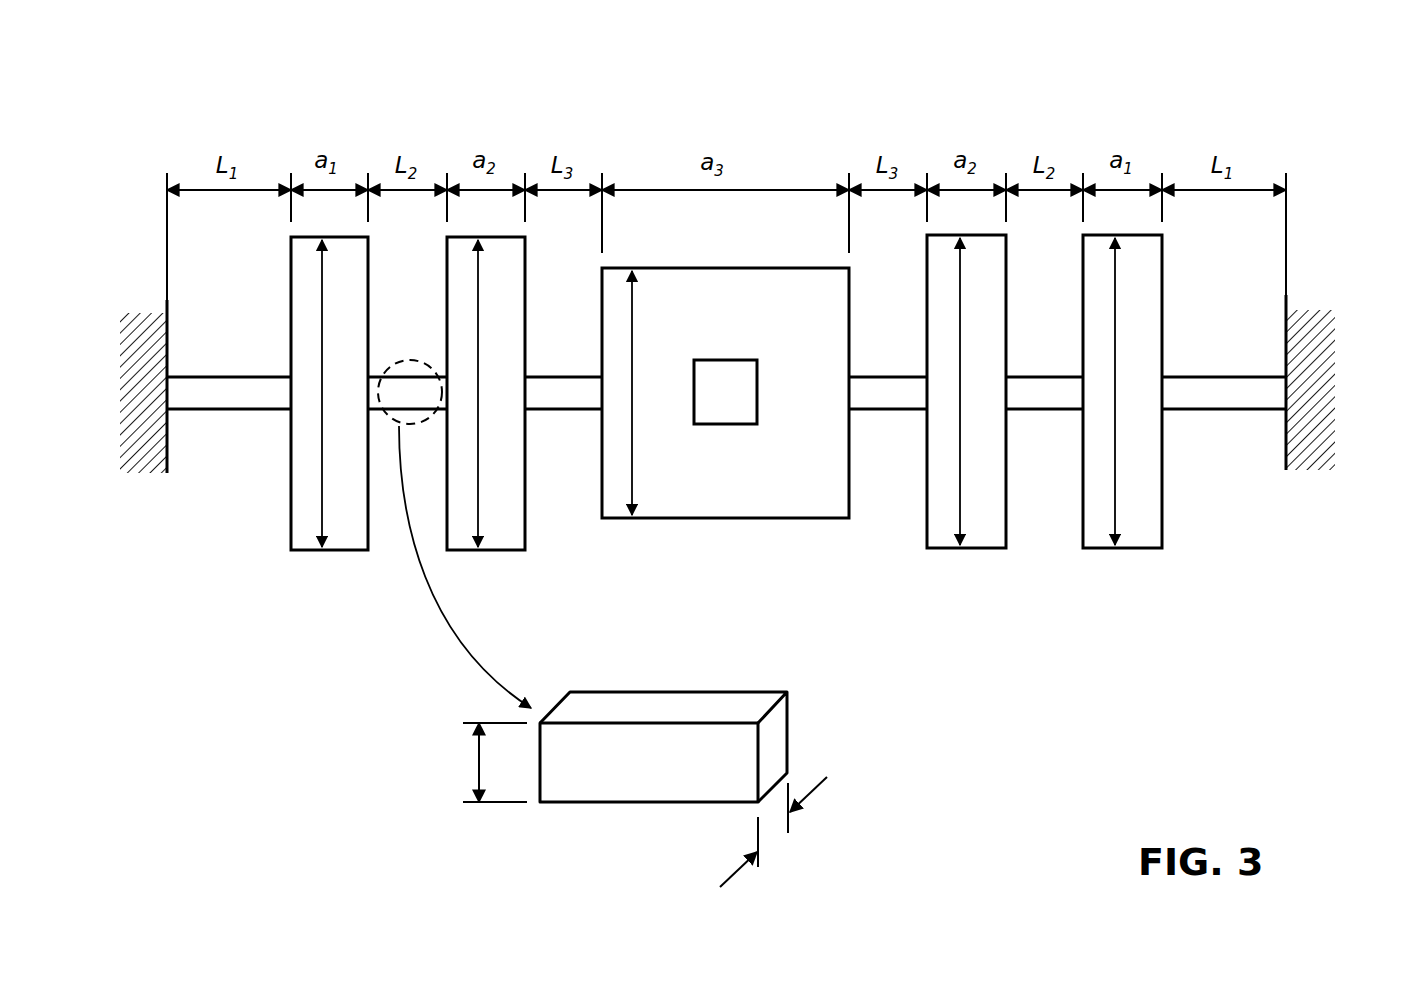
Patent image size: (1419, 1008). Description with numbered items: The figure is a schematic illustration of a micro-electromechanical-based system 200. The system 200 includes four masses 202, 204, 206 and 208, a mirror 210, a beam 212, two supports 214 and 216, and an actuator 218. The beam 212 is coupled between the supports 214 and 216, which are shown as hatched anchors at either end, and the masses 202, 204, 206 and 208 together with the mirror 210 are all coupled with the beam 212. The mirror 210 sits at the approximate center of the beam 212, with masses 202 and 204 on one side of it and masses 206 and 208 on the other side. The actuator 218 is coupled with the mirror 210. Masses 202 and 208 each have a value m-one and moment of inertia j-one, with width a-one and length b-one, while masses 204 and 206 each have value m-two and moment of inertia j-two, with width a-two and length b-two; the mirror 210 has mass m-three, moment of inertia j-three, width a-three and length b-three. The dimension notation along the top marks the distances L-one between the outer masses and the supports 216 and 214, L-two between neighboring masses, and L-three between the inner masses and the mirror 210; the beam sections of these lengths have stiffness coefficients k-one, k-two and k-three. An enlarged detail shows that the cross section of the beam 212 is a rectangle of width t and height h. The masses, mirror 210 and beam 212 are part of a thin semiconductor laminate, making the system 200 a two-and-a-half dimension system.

The system 200 is at (713, 110).
The mass 202 is at (312, 553).
The mass 204 is at (500, 553).
The mass 206 is at (977, 550).
The mass 208 is at (1130, 550).
The mirror 210 is at (790, 518).
The beam 212 is at (1180, 410).
The support 214 is at (1318, 310).
The support 216 is at (145, 312).
The actuator 218 is at (708, 424).